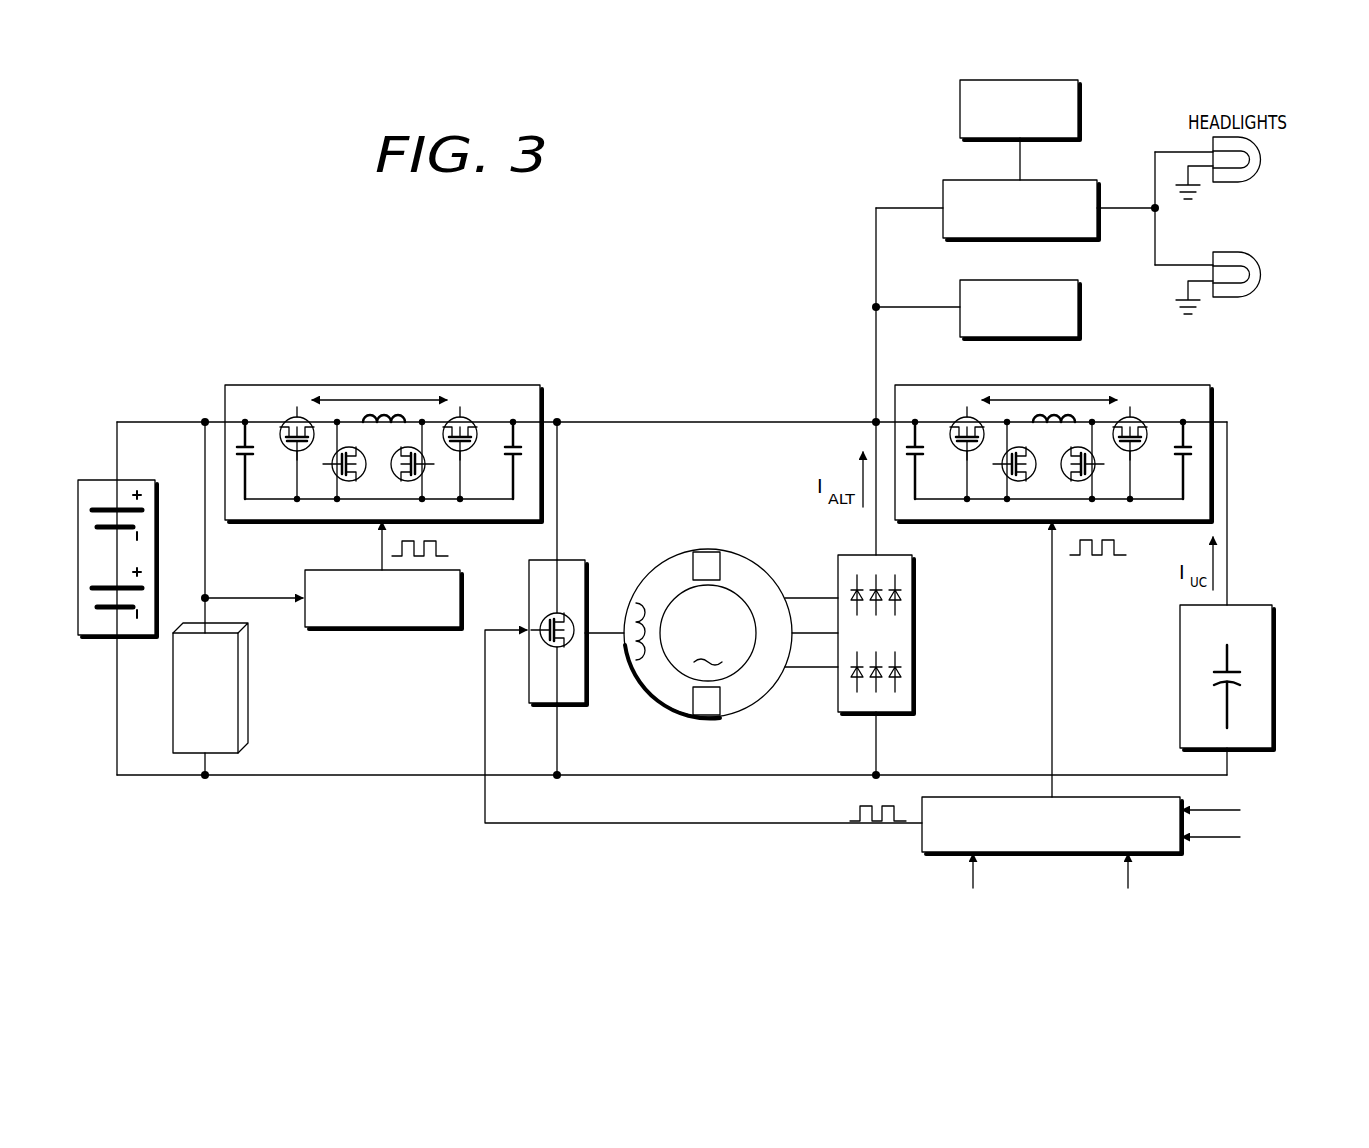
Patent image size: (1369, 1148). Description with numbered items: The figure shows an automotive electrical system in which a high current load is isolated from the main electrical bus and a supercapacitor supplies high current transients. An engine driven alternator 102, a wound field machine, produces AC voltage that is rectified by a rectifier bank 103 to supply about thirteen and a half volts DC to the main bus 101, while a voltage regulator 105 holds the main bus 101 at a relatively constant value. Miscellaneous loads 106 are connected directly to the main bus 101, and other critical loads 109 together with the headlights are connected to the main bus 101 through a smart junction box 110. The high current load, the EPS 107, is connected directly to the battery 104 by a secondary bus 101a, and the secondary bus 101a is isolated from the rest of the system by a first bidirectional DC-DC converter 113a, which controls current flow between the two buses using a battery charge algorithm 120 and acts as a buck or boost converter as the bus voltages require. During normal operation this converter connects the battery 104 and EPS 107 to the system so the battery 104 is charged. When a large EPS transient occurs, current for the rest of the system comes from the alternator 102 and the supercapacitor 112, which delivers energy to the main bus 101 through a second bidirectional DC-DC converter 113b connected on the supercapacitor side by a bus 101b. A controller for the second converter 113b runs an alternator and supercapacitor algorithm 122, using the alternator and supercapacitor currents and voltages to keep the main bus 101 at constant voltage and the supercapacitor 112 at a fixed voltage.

The main bus 101 is at (797, 421).
The secondary bus 101a is at (162, 424).
The ultracapacitor voltage bus (0-20 volts) 101b is at (1227, 492).
The alternator 102 is at (745, 712).
The rectifier bank 103 is at (915, 648).
The battery 104 is at (78, 582).
The voltage regulator 105 is at (570, 706).
The miscellaneous loads 106 is at (1078, 308).
The EPS 107 is at (243, 693).
The other critical loads 109 is at (1048, 80).
The smart junction box 110 is at (965, 180).
The supercapacitor 112 is at (1272, 648).
The first bidirectional DC-DC converter 113a is at (540, 388).
The second bidirectional DC-DC converter 113b is at (1208, 388).
The battery charge algorithm 120 is at (400, 629).
The alternator and supercapacitor algorithm 122 is at (925, 853).